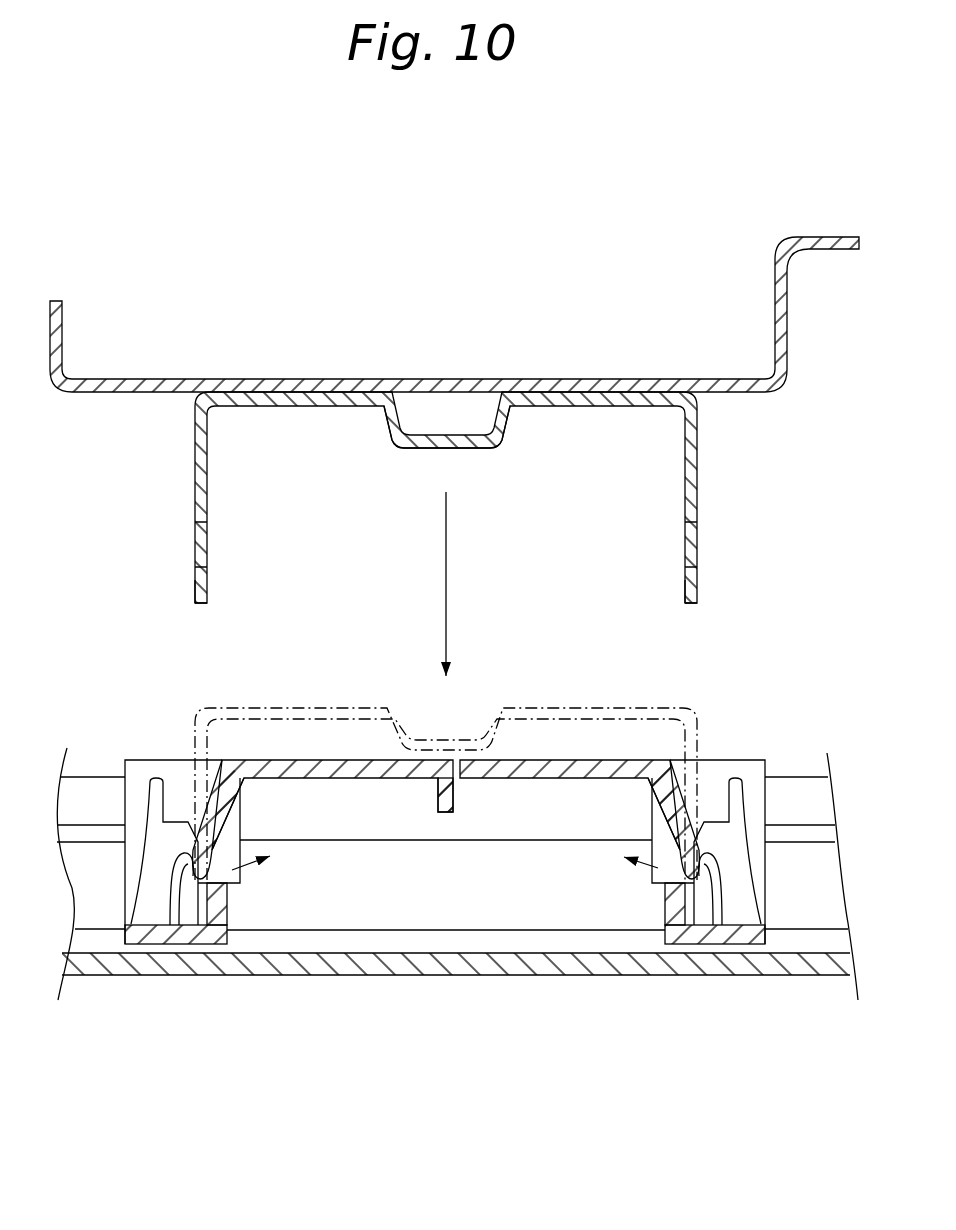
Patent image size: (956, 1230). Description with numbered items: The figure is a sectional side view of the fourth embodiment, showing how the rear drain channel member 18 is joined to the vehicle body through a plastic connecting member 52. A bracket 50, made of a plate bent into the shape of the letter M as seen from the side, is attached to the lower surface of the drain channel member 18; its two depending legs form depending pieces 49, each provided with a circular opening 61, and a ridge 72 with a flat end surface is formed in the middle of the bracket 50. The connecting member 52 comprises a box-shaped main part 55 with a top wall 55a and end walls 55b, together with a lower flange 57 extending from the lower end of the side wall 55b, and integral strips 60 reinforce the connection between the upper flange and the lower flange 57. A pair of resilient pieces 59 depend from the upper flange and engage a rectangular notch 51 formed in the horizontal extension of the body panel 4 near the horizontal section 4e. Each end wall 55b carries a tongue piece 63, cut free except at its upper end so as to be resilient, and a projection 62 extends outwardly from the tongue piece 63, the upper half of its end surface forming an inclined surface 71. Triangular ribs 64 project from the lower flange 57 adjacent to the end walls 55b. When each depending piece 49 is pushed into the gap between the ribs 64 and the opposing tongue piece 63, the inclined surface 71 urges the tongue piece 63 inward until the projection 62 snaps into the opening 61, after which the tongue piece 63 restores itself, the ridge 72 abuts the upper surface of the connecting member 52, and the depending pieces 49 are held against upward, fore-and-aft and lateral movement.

The rear drain channel member 18 is at (826, 236).
The bracket 50 is at (185, 460).
The depending pieces 49 is at (196, 589).
The circular opening 61 is at (208, 538).
The ridge 72 is at (467, 449).
The connecting member 52 is at (446, 776).
The main part 55 is at (446, 790).
The top wall 55a is at (327, 780).
The end wall 55b is at (226, 900).
The body panel 4 is at (440, 989).
The horizontal section 4e is at (82, 777).
The rectangular notch 51 is at (131, 840).
The lower flange 57 is at (153, 944).
The resilient pieces 59 is at (170, 803).
The integral strips 60 is at (126, 798).
The projection 62 is at (205, 886).
The tongue piece 63 is at (231, 866).
The triangular ribs 64 is at (126, 893).
The inclined surface 71 is at (183, 885).